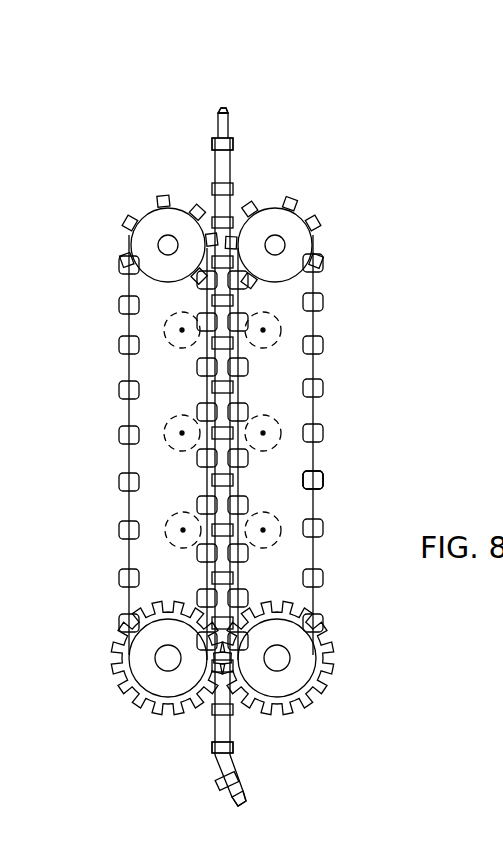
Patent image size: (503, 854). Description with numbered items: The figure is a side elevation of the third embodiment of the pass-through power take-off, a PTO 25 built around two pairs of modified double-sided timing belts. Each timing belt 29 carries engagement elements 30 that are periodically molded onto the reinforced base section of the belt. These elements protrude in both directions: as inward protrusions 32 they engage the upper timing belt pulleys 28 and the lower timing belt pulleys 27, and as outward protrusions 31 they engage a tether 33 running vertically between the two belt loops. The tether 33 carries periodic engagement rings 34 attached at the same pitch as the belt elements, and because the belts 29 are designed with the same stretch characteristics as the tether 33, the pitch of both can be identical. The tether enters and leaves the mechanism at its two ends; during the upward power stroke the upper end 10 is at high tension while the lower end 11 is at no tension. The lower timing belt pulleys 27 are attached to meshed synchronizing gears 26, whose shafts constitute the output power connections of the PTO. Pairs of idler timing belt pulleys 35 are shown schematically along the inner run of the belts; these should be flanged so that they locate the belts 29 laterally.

The end 10 is at (235, 100).
The lower end 11 is at (257, 810).
The drive assembly 25 is at (377, 88).
The synchronizing gears 26 is at (172, 715).
The lower timing belt pulleys 27 is at (152, 678).
The timing belt pulleys 28 is at (148, 222).
The timing belts 29 is at (120, 410).
The engagement elements 30 is at (110, 303).
The outward protrusions 31 is at (327, 490).
The inward protrusions 32 is at (318, 482).
The tether 33 is at (227, 165).
The engagement rings 34 is at (240, 142).
The idler timing belt pulleys 35 is at (178, 442).